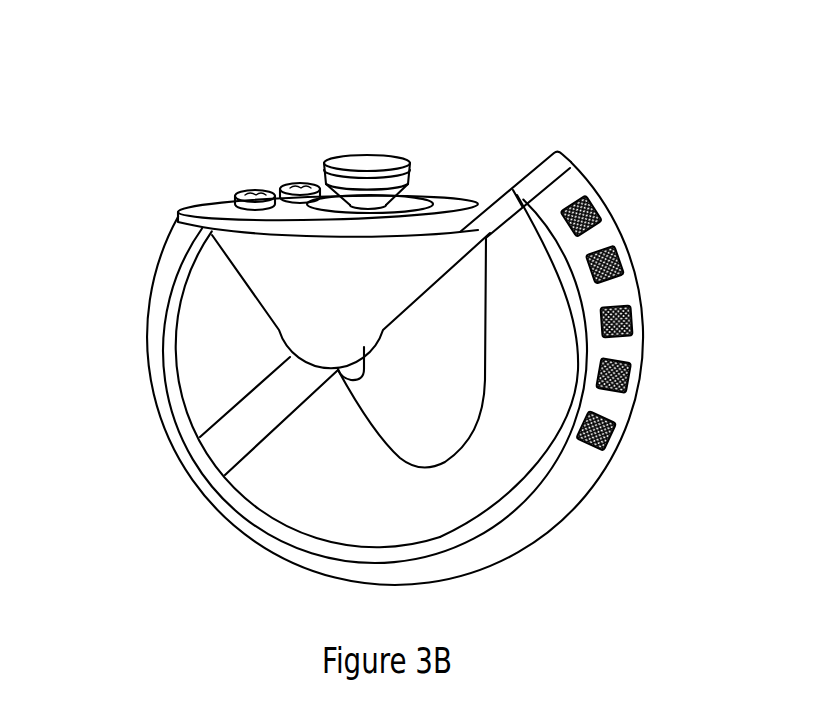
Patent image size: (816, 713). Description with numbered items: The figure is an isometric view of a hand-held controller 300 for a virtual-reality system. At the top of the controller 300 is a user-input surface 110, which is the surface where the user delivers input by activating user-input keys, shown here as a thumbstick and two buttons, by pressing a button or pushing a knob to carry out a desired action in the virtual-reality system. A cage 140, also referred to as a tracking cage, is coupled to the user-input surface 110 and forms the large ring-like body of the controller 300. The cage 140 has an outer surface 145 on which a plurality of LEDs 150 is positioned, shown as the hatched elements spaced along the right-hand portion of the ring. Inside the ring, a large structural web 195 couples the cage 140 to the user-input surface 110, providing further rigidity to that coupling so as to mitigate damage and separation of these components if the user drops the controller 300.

The hand-held controller 300 is at (151, 104).
The user-input surface 110 is at (222, 205).
The cage 140 is at (168, 272).
The outer surface 145 is at (604, 233).
The LEDs 150 is at (630, 320).
The structural web 195 is at (210, 367).